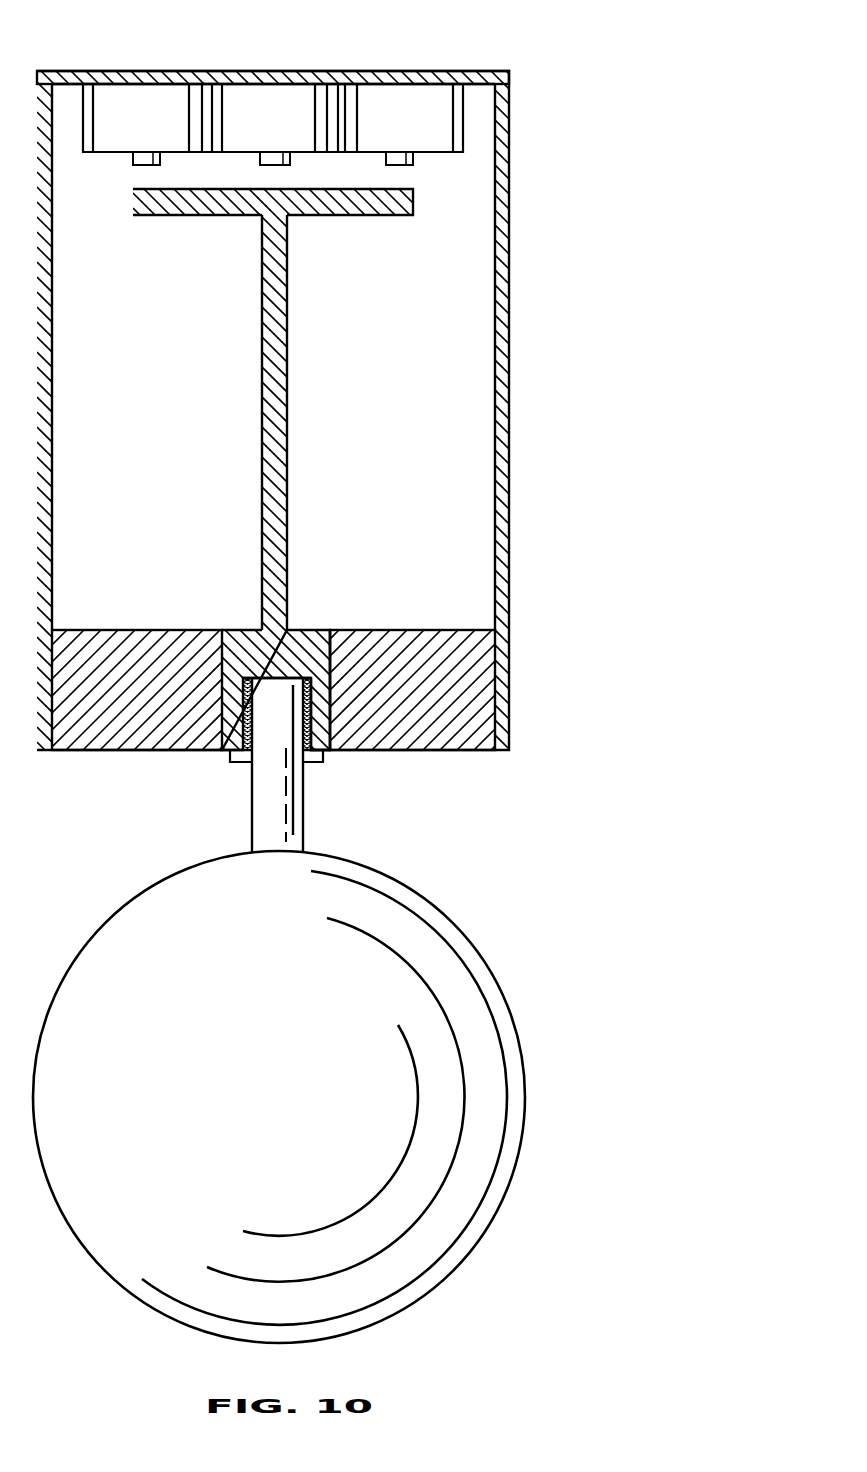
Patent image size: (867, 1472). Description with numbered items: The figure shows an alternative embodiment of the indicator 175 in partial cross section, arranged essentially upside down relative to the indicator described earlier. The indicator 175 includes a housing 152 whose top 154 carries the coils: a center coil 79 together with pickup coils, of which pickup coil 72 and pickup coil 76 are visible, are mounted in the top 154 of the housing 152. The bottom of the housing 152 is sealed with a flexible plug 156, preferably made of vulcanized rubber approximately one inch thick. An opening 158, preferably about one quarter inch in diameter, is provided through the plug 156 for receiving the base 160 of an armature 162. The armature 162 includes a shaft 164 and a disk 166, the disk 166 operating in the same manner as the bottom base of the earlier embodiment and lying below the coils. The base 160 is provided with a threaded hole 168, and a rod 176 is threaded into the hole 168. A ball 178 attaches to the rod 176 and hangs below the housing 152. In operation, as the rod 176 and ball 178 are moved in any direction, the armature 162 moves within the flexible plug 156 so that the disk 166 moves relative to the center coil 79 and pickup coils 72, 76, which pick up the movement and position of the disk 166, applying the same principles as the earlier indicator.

The pickup coil 72 is at (417, 103).
The pickup coil 76 is at (143, 103).
The center coil 79 is at (273, 103).
The housing 152 is at (500, 208).
The top 154 is at (481, 73).
The flexible plug 156 is at (460, 737).
The opening 158 is at (323, 657).
The base 160 is at (248, 645).
The armature 162 is at (231, 339).
The shaft 164 is at (278, 498).
The disk 166 is at (338, 207).
The threaded hole 168 is at (247, 752).
The indicator 175 is at (593, 86).
The rod 176 is at (303, 780).
The ball 178 is at (508, 1006).